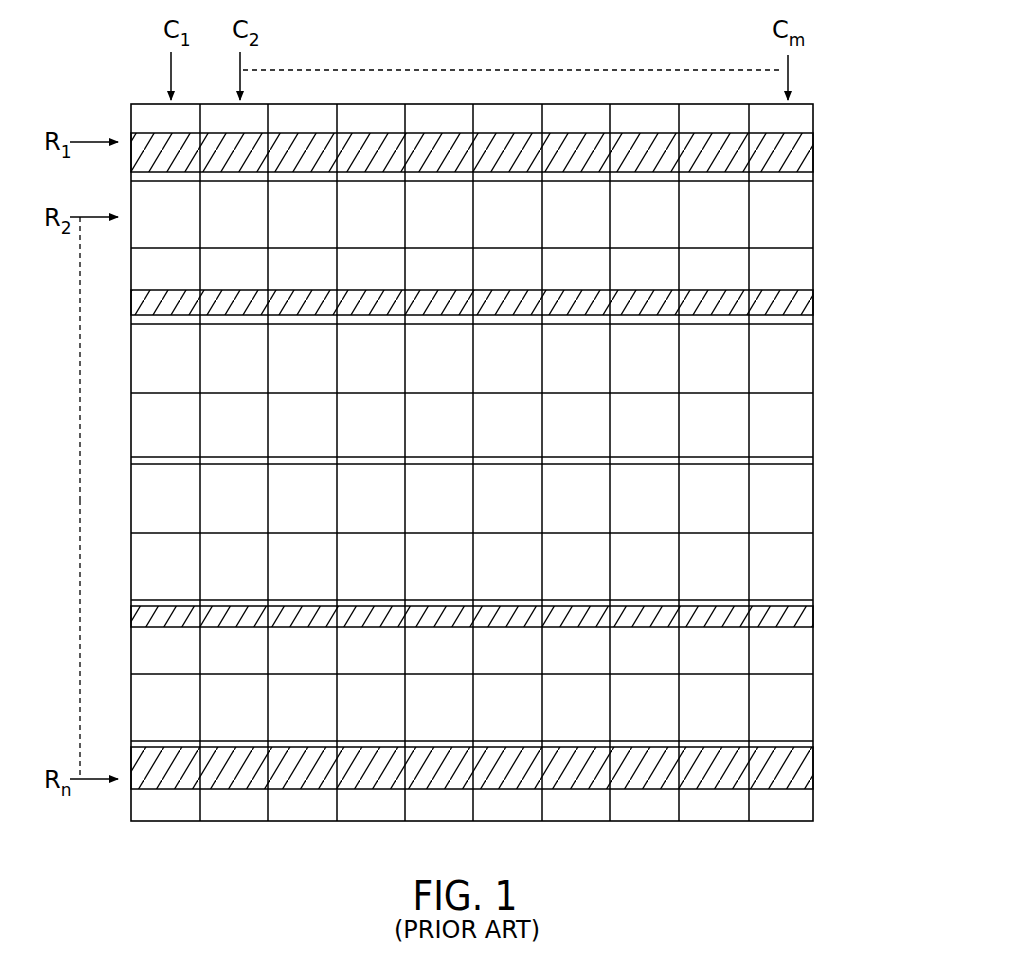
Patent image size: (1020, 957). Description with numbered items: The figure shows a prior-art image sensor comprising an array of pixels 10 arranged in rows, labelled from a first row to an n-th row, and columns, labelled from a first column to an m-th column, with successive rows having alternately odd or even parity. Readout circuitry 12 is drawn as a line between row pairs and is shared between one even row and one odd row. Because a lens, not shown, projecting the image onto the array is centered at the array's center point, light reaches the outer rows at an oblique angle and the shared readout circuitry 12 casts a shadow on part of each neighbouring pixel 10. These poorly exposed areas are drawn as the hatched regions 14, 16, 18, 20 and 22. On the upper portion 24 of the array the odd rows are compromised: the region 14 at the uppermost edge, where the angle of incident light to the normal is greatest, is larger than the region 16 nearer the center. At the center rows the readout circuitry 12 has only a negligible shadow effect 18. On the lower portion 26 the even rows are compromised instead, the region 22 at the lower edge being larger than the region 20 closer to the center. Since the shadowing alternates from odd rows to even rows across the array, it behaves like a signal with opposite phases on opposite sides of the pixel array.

The pixel 10 is at (428, 203).
The readout circuitry 12 is at (808, 179).
The shadow region 14 is at (795, 150).
The shadow region 16 is at (788, 303).
The shadow effect 18 is at (748, 465).
The shadow region 20 is at (797, 618).
The shadow region 22 is at (764, 780).
The upper portion 24 is at (70, 318).
The lower portion 26 is at (63, 585).